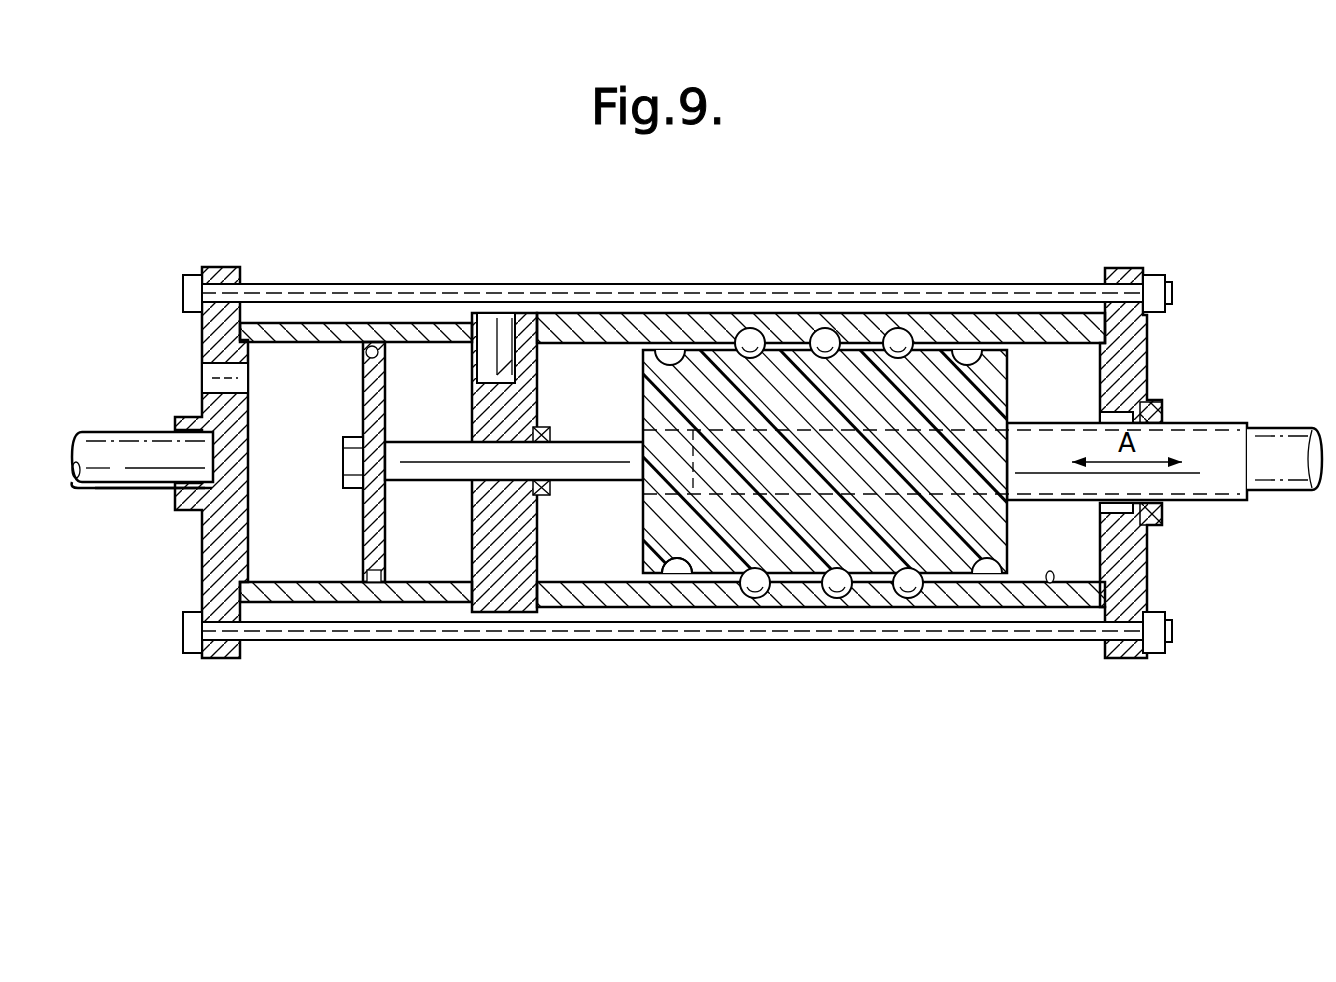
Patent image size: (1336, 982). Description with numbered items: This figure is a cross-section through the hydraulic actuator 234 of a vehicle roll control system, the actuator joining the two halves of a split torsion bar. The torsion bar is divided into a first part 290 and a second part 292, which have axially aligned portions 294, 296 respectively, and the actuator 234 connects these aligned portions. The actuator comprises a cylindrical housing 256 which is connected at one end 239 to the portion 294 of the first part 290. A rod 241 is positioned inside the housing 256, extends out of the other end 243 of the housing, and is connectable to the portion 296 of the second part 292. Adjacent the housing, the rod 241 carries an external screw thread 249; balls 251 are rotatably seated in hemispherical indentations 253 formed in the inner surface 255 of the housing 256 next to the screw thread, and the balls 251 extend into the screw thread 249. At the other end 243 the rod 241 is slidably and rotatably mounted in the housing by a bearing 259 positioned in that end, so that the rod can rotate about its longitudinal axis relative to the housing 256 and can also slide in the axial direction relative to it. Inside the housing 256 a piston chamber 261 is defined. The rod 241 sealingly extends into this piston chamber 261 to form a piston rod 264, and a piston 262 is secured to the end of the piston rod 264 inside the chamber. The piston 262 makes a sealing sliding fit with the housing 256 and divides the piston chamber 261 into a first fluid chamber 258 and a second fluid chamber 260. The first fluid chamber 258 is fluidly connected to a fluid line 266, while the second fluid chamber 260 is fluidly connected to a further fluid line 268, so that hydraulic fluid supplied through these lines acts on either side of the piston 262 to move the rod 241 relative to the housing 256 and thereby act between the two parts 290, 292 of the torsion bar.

The hydraulic actuator 234 is at (831, 250).
The one end of the housing 239 is at (215, 570).
The rod 241 is at (1012, 383).
The other end of the housing 243 is at (1122, 572).
The external screw thread 249 is at (721, 562).
The balls 251 is at (760, 592).
The hemispherical indentations 253 is at (912, 592).
The inner surface 255 is at (1050, 590).
The cylindrical housing 256 is at (584, 610).
The first fluid chamber 258 is at (286, 350).
The bearing 259 is at (1146, 412).
The second fluid chamber 260 is at (432, 350).
The piston chamber 261 is at (333, 542).
The piston 262 is at (353, 345).
The piston rod 264 is at (434, 485).
The fluid line 266 is at (235, 378).
The fluid line 268 is at (510, 350).
The first part of the torsion bar 290 is at (120, 490).
The second part of the torsion bar 292 is at (1283, 502).
The portion of the first part 294 is at (122, 445).
The portion of the second part 296 is at (1282, 440).